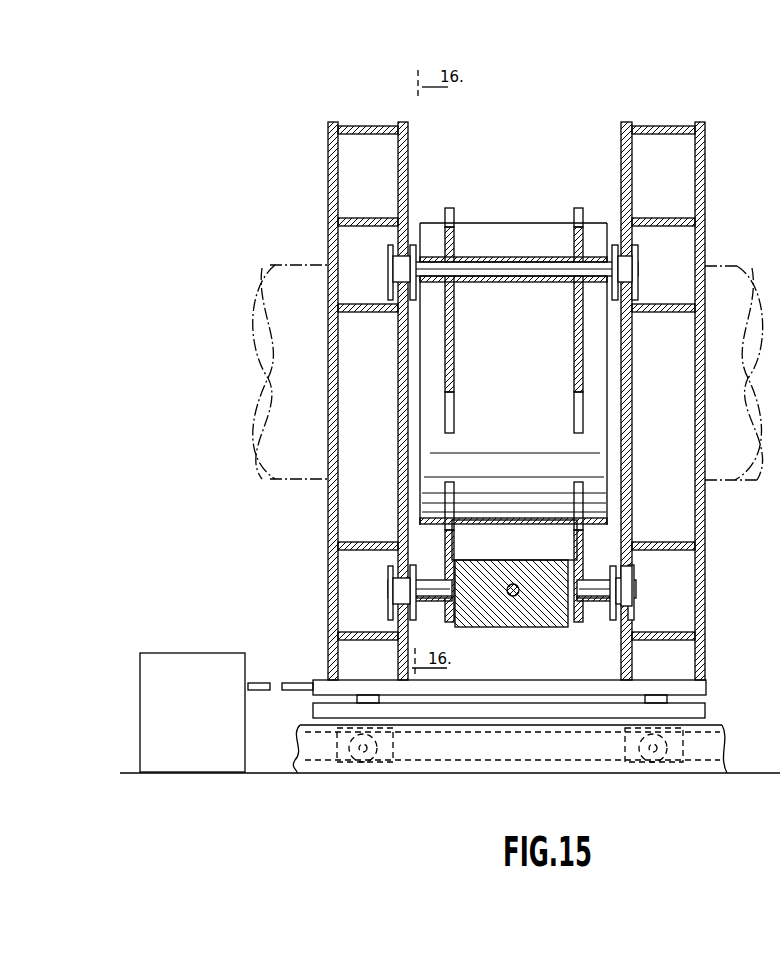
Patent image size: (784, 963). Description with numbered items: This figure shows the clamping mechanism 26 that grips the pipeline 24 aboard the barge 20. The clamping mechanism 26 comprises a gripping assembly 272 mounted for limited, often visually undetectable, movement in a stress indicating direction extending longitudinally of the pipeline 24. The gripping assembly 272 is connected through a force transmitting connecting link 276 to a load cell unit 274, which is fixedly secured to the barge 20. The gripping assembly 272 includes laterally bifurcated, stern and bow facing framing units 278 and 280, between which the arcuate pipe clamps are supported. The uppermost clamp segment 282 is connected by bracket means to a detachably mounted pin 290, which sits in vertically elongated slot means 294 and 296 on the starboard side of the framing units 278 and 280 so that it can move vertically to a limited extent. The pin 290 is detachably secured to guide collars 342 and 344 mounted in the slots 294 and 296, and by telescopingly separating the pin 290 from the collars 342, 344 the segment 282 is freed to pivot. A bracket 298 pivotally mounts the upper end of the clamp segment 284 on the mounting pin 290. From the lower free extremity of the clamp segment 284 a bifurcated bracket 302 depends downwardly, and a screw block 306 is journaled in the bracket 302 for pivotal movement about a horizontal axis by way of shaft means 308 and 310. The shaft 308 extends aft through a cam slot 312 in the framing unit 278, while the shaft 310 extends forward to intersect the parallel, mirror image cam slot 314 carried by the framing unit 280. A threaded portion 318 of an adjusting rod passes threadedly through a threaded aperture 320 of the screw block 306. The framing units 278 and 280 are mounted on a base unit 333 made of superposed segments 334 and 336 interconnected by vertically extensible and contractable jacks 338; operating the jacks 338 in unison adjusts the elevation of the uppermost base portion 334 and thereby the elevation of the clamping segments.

The barge 20 is at (287, 773).
The pipeline 24 is at (312, 430).
The clamping mechanism 26 is at (540, 374).
The gripping assembly 272 is at (549, 374).
The load cell unit 274 is at (182, 695).
The force transmitting connecting link 276 is at (262, 683).
The framing unit 278 is at (409, 166).
The framing unit 280 is at (704, 116).
The uppermost clamp segment 282 is at (444, 230).
The clamp segment 284 is at (527, 444).
The mounting pin 290 is at (528, 266).
The slot means 294 is at (398, 241).
The slot means 296 is at (628, 240).
The bracket 298 is at (454, 378).
The bifurcated bracket 302 is at (452, 527).
The screw block 306 is at (504, 618).
The shaft means 308 is at (430, 600).
The shaft 310 is at (598, 601).
The cam slot 312 is at (405, 566).
The cam slot 314 is at (634, 561).
The threaded portion of adjusting rod 318 is at (514, 584).
The threaded aperture 320 is at (575, 566).
The base unit 333 is at (539, 677).
The uppermost base segment 334 is at (708, 688).
The base segment 336 is at (708, 710).
The jacks 338 is at (364, 698).
The guide collar 342 is at (392, 280).
The guide collar 344 is at (640, 274).